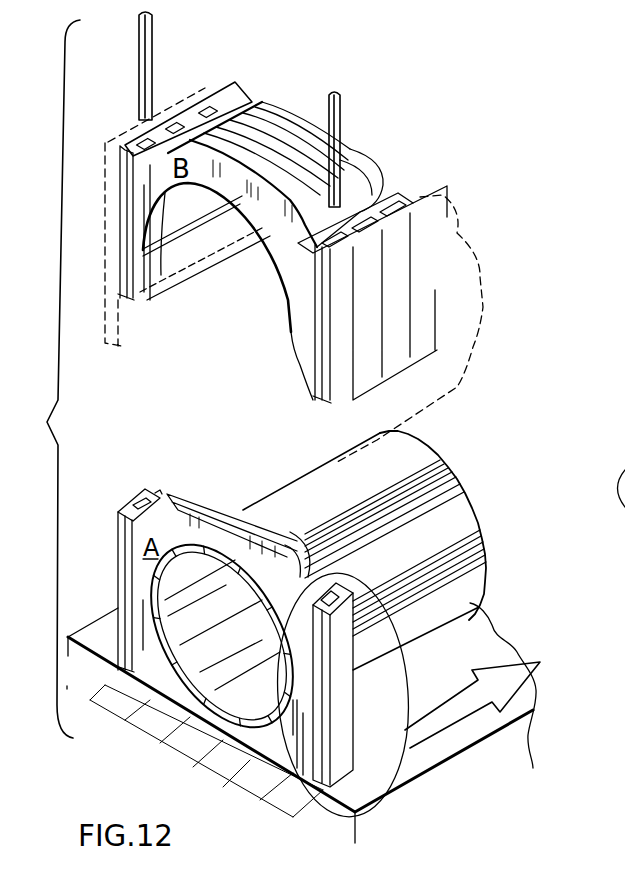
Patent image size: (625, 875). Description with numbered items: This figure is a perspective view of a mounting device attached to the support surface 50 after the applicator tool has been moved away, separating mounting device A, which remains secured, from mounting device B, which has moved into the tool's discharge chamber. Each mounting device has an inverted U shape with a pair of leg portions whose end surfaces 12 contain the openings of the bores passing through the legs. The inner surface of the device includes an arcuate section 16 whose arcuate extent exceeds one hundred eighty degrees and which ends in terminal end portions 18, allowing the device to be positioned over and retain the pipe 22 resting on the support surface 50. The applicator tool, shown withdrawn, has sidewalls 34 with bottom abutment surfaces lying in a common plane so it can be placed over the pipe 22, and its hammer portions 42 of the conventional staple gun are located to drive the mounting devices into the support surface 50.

The end surface 12 is at (140, 274).
The arcuate section 16 is at (287, 288).
The terminal end portion 18 is at (152, 256).
The pipe 22 is at (162, 680).
The sidewall 34 is at (116, 220).
The hammer portion 42 is at (153, 50).
The support surface 50 is at (455, 661).